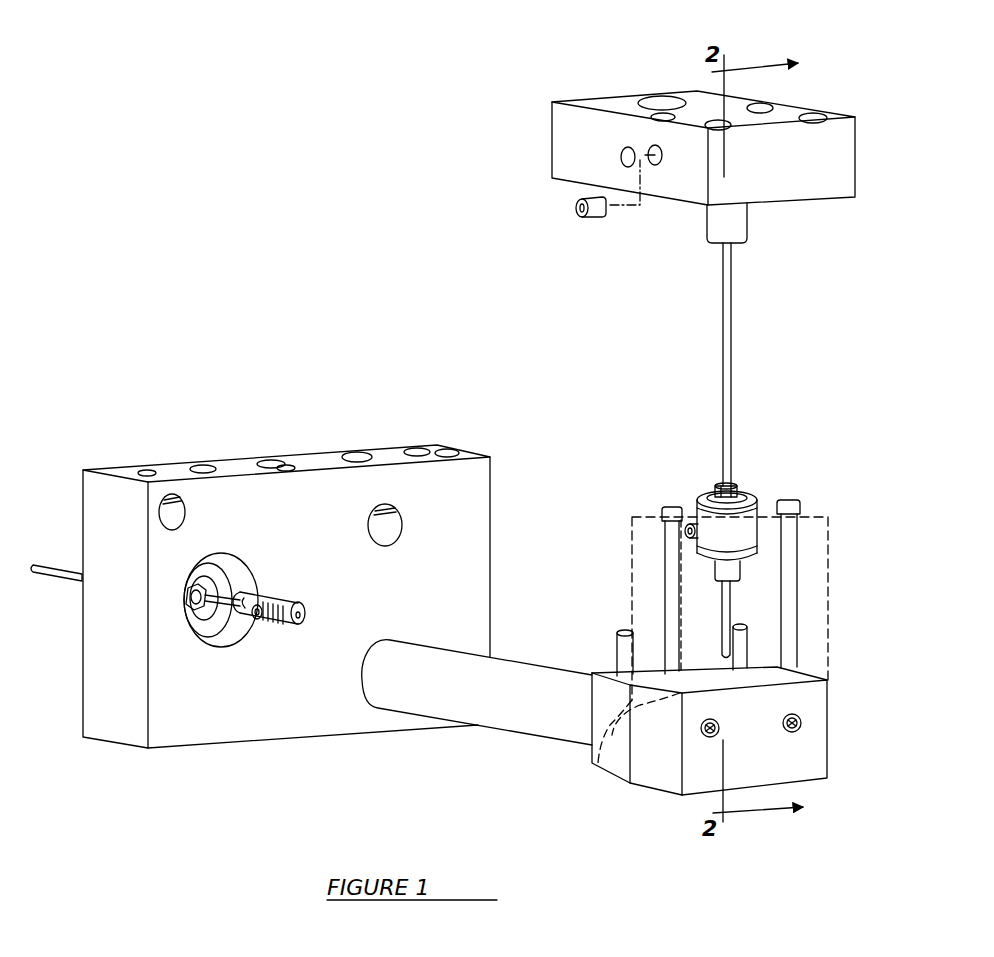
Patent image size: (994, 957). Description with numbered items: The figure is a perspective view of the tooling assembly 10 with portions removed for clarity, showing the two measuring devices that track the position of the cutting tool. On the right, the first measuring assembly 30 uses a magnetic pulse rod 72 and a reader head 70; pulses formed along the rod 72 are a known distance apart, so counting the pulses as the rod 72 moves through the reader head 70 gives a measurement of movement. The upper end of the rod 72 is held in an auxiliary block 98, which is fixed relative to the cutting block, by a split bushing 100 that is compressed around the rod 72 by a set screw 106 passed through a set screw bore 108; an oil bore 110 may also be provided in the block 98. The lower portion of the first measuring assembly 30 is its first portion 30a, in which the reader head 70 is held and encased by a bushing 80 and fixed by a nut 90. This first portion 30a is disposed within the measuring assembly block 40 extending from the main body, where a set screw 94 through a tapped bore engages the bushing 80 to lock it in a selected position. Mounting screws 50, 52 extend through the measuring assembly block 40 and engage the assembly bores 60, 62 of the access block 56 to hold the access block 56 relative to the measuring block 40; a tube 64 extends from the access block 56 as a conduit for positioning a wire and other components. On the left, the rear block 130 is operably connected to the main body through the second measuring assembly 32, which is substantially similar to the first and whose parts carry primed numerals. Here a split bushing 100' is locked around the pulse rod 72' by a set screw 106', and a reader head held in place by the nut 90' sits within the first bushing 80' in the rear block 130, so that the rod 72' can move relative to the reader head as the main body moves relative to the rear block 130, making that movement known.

The tooling assembly 10 is at (283, 220).
The auxiliary block 98 is at (667, 144).
The bushing 100 is at (717, 141).
The set screw bore 108 is at (648, 152).
The oil bore 110 is at (621, 157).
The set screw 106 is at (557, 188).
The magnetic pulse rod 72 is at (777, 364).
The first measuring assembly 30 is at (680, 372).
The first portion of the measuring assembly 30a is at (734, 534).
The nut 90 is at (746, 458).
The bushing 80 is at (759, 505).
The set screw 94 is at (685, 534).
The reader head 70 is at (740, 578).
The measuring assembly block 40 is at (737, 620).
The mounting screw 50 is at (670, 504).
The mounting screw 52 is at (797, 501).
The access block 56 is at (716, 727).
The assembly bore 60 is at (592, 769).
The assembly bore 62 is at (797, 698).
The tube 64 is at (510, 680).
The rear block 130 is at (343, 410).
The first bushing 80' is at (221, 531).
The nut 90' is at (239, 514).
The split bushing 100' is at (265, 692).
The set screw 106' is at (249, 697).
The pulse rod 72' is at (56, 532).
The second measuring assembly 32 is at (175, 640).